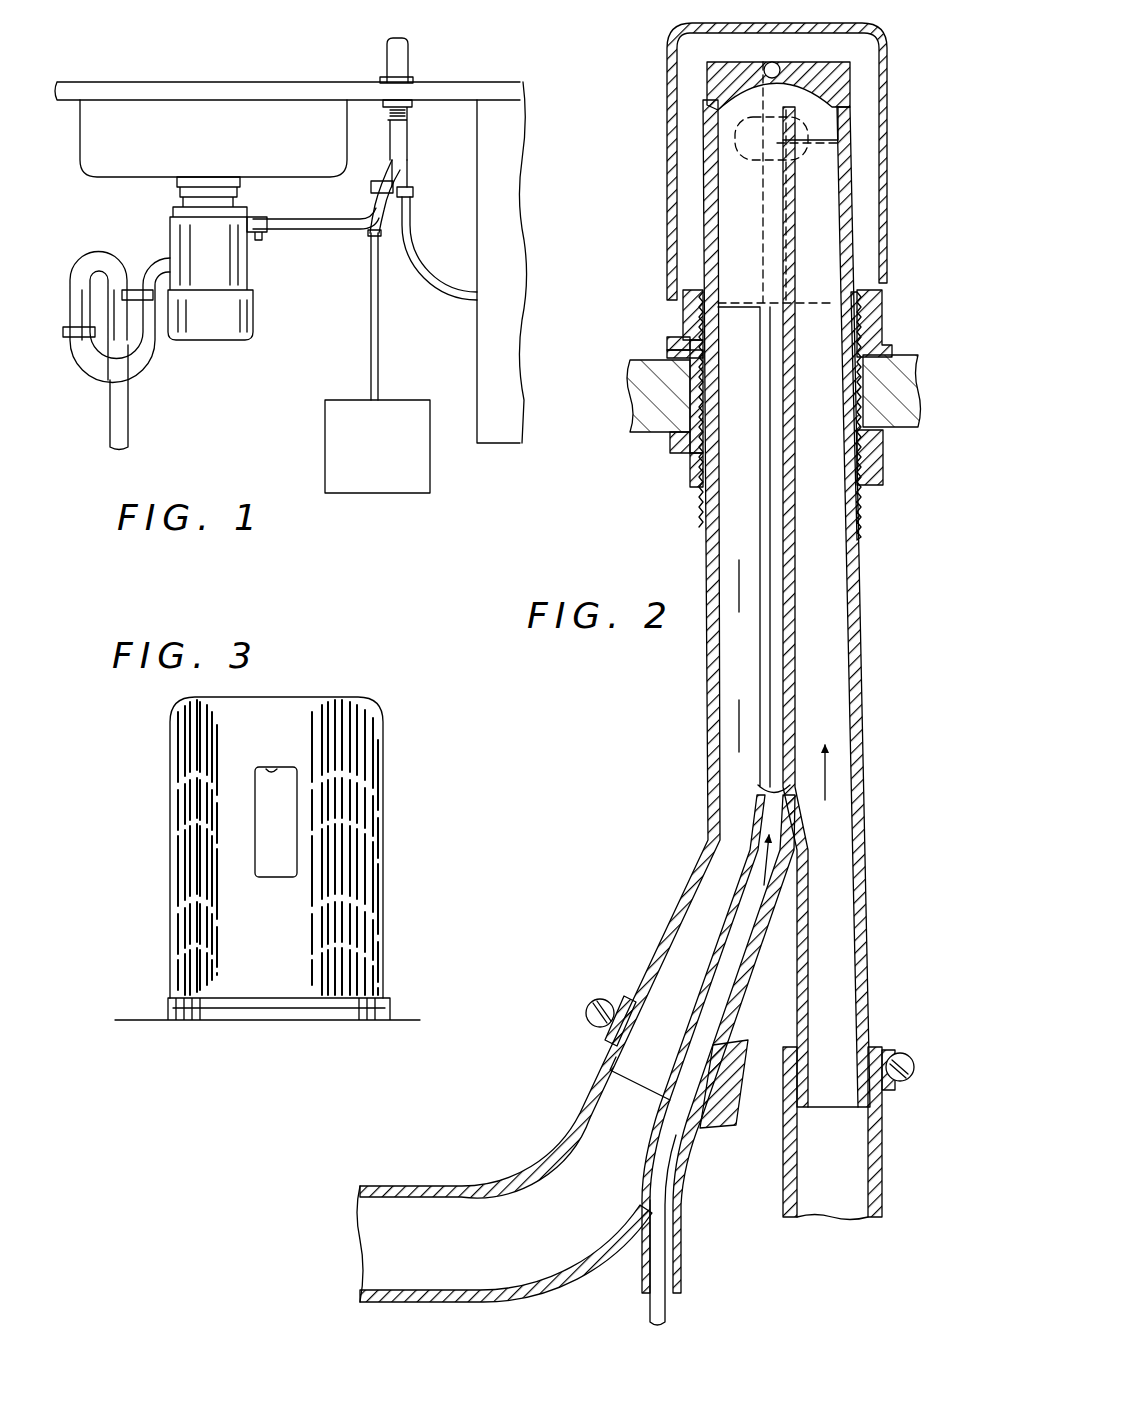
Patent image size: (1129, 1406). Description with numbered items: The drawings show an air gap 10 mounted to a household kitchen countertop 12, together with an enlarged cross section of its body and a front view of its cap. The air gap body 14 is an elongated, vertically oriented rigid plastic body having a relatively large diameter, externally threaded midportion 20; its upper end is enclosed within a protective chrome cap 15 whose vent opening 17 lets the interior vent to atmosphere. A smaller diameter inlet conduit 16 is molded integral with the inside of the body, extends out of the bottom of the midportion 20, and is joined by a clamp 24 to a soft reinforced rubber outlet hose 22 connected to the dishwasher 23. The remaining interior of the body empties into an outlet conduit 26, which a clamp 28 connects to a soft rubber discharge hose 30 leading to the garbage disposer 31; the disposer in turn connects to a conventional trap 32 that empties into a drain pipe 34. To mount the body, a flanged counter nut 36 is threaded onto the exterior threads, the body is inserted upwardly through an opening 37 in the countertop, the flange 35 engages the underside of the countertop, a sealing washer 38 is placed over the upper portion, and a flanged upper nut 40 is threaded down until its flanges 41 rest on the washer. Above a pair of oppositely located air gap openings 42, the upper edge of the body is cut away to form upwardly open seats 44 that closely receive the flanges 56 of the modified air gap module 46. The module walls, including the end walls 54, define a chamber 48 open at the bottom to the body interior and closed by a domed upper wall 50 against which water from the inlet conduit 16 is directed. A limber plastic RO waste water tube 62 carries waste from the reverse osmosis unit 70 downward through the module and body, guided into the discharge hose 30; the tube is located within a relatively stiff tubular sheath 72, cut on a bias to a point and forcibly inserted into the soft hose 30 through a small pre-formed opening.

In FIG. 1, the air gap 10 is at (410, 42).
In FIG. 2, the air gap 10 is at (664, 266).
In FIG. 1, the countertop 12 is at (489, 82).
In FIG. 3, the countertop 12 is at (405, 1018).
In FIG. 2, the countertop 12 is at (900, 360).
In FIG. 1, the air gap body 14 is at (412, 135).
In FIG. 2, the air gap body 14 is at (698, 172).
In FIG. 3, the protective chrome cap 15 is at (384, 738).
In FIG. 2, the protective chrome cap 15 is at (881, 178).
In FIG. 1, the inlet conduit 16 is at (407, 172).
In FIG. 2, the inlet conduit 16 is at (790, 240).
In FIG. 3, the vent opening 17 is at (272, 769).
In FIG. 2, the vent opening 17 is at (672, 108).
In FIG. 2, the midportion 20 is at (705, 516).
In FIG. 1, the outlet hose 22 is at (432, 282).
In FIG. 2, the outlet hose 22 is at (882, 1148).
In FIG. 1, the dishwasher 23 is at (500, 443).
In FIG. 1, the clamp 24 is at (413, 192).
In FIG. 2, the clamp 24 is at (882, 1058).
In FIG. 1, the outlet conduit 26 is at (392, 172).
In FIG. 2, the outlet conduit 26 is at (710, 868).
In FIG. 1, the clamp 28 is at (371, 187).
In FIG. 2, the clamp 28 is at (613, 1008).
In FIG. 1, the discharge hose 30 is at (372, 207).
In FIG. 2, the discharge hose 30 is at (585, 1108).
In FIG. 1, the garbage disposer 31 is at (212, 335).
In FIG. 1, the trap 32 is at (146, 362).
In FIG. 1, the drain pipe 34 is at (130, 432).
In FIG. 2, the flange 35 is at (672, 440).
In FIG. 2, the counter nut 36 is at (692, 472).
In FIG. 2, the opening 37 is at (690, 386).
In FIG. 2, the sealing washer 38 is at (667, 354).
In FIG. 2, the upper nut 40 is at (683, 306).
In FIG. 2, the flanges 41 is at (670, 340).
In FIG. 2, the air gap openings 42 is at (782, 130).
In FIG. 2, the seats 44 is at (707, 98).
In FIG. 2, the air gap module 46 is at (856, 55).
In FIG. 2, the chamber 48 is at (730, 206).
In FIG. 2, the domed upper wall 50 is at (763, 68).
In FIG. 2, the end walls 54 is at (838, 160).
In FIG. 2, the flanges 56 is at (852, 108).
In FIG. 1, the RO waste water tube 62 is at (379, 318).
In FIG. 2, the RO waste water tube 62 is at (776, 62).
In FIG. 1, the reverse osmosis unit 70 is at (430, 445).
In FIG. 1, the tubular sheath 72 is at (366, 234).
In FIG. 2, the tubular sheath 72 is at (760, 252).